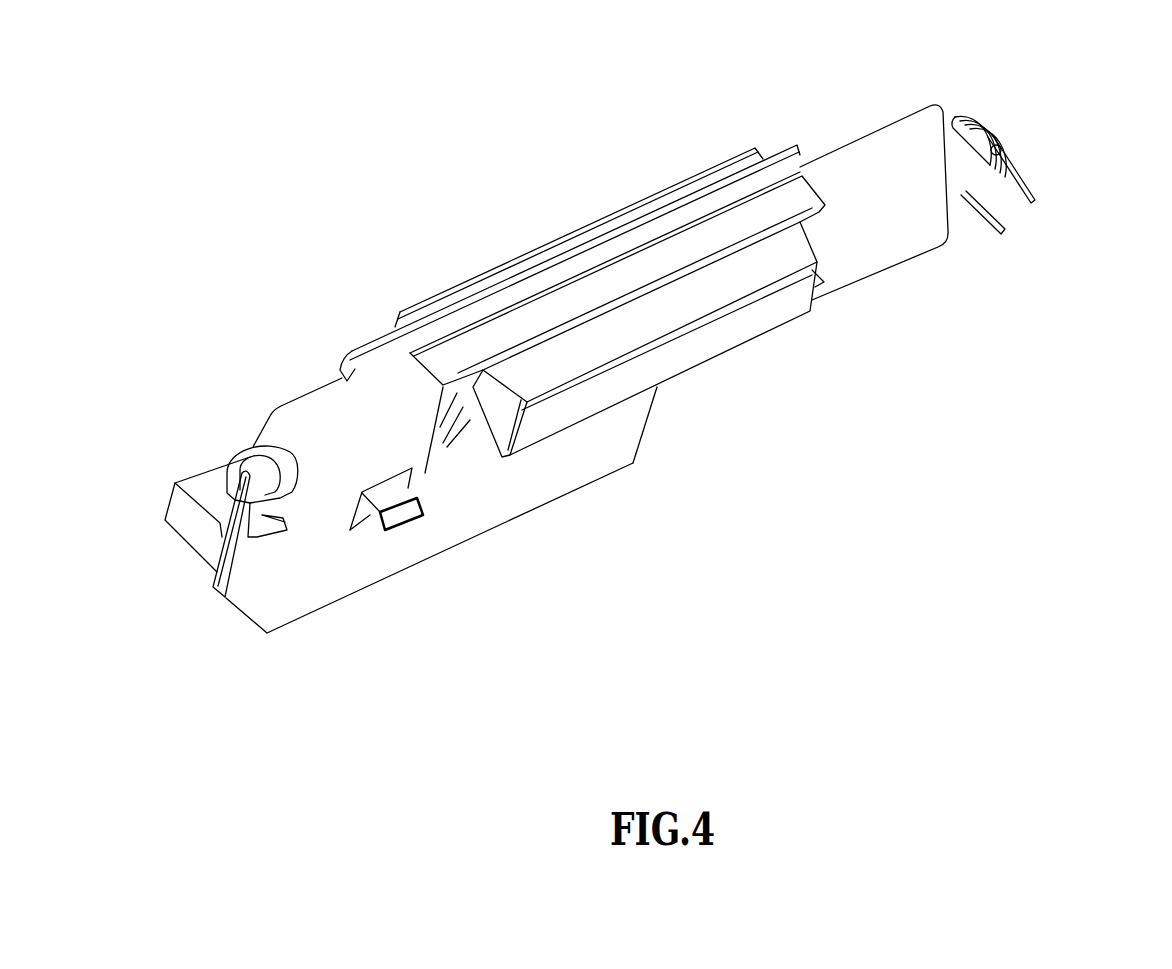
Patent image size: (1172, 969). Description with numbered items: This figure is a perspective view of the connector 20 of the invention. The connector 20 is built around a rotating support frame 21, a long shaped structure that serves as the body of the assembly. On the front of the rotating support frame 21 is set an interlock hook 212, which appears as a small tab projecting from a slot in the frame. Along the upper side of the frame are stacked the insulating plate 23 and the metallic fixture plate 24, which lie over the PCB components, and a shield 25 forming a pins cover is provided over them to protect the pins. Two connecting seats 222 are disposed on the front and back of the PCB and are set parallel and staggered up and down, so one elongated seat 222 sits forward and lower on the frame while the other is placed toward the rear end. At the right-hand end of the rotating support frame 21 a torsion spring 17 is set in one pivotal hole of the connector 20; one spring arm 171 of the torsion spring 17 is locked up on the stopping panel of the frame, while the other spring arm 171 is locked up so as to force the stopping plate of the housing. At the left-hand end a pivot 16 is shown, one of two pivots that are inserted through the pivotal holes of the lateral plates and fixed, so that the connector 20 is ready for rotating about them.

The connector 20 is at (378, 216).
The rotating support frame 21 is at (1045, 277).
The connecting seat 222 is at (657, 322).
The pivot 16 is at (260, 468).
The interlock hook 212 is at (460, 633).
The shield 25 is at (535, 257).
The metallic fixture plate 24 is at (767, 163).
The insulating plate 23 is at (790, 167).
The torsion spring 17 is at (962, 117).
The spring arm 171 is at (1107, 222).